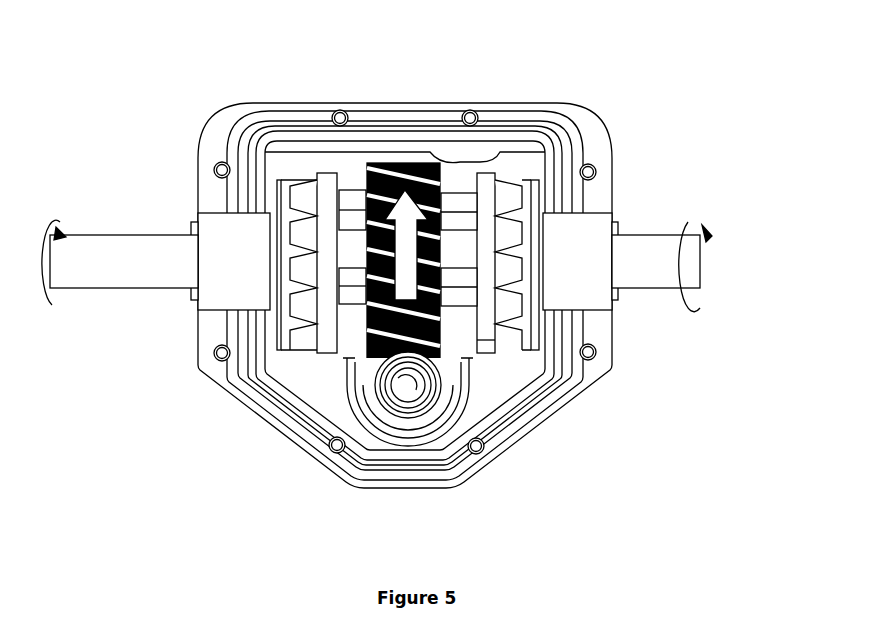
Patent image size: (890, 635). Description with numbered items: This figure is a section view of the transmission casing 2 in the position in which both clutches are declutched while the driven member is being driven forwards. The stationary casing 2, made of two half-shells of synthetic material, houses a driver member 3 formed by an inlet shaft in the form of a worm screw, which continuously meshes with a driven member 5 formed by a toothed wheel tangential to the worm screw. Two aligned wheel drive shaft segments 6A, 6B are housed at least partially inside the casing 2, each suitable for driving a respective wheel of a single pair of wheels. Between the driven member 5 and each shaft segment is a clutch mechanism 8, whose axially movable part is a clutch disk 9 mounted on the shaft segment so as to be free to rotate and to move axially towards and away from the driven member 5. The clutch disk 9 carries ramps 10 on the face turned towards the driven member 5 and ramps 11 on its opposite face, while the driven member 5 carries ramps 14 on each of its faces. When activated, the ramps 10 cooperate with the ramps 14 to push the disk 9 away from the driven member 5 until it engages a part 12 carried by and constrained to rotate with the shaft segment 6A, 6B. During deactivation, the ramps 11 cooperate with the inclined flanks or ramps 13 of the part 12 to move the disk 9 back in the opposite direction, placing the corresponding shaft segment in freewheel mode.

The casing 2 is at (407, 489).
The driver member 3 is at (410, 386).
The driven member 5 is at (403, 163).
The wheel drive shaft segment 6A is at (665, 290).
The wheel drive shaft segment 6B is at (137, 288).
The clutch mechanism 8 is at (492, 350).
The clutch disk 9 is at (313, 168).
The ramps 10 is at (357, 266).
The ramps 11 is at (505, 190).
The part constrained to rotate with the wheel drive shaft segment 12 is at (531, 206).
The ramps 13 is at (514, 182).
The ramps 14 is at (357, 187).